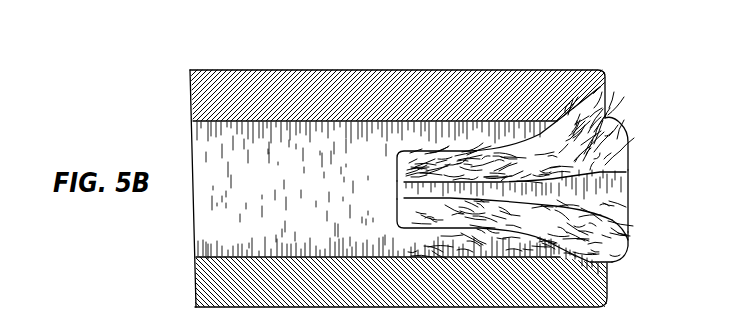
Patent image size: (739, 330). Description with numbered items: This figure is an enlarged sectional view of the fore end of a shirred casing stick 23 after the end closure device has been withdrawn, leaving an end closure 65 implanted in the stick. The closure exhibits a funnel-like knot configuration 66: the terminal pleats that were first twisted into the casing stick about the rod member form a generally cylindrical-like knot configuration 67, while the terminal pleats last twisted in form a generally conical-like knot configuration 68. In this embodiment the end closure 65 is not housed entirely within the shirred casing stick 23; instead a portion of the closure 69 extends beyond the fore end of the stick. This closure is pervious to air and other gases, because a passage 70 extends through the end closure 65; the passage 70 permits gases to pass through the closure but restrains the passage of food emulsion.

The shirred casing stick 23 is at (448, 69).
The end closure 65 is at (623, 117).
The funnel-like knot configuration 66 is at (596, 187).
The cylindrical-like knot configuration 67 is at (422, 152).
The conical-like knot configuration 68 is at (536, 263).
The portion of the closure extending beyond the fore end 69 is at (623, 256).
The passage 70 is at (405, 191).